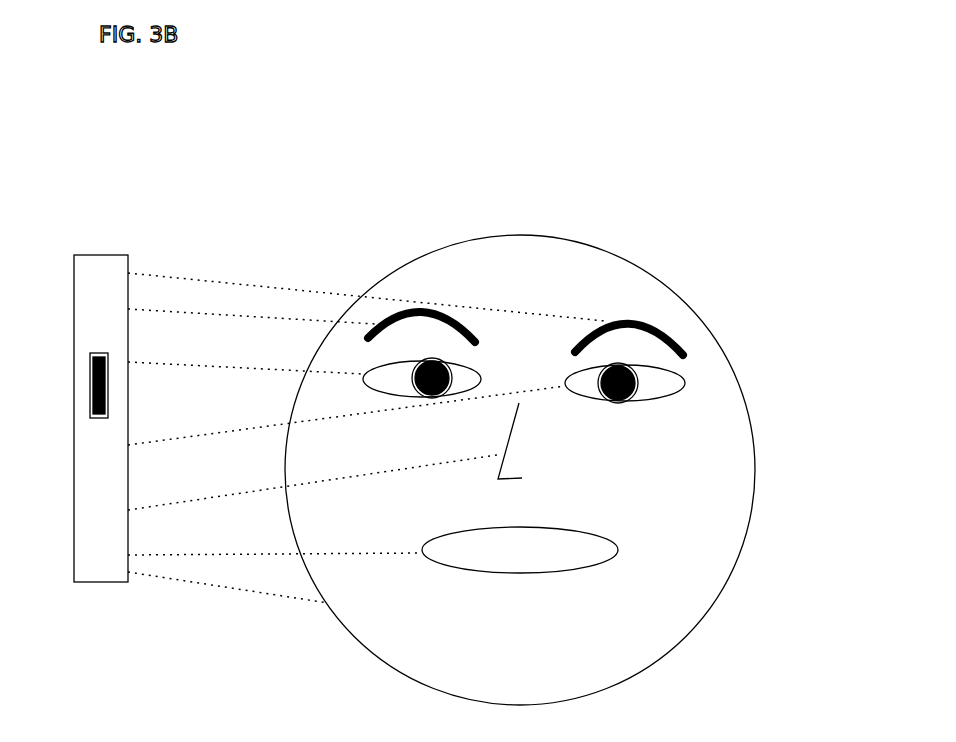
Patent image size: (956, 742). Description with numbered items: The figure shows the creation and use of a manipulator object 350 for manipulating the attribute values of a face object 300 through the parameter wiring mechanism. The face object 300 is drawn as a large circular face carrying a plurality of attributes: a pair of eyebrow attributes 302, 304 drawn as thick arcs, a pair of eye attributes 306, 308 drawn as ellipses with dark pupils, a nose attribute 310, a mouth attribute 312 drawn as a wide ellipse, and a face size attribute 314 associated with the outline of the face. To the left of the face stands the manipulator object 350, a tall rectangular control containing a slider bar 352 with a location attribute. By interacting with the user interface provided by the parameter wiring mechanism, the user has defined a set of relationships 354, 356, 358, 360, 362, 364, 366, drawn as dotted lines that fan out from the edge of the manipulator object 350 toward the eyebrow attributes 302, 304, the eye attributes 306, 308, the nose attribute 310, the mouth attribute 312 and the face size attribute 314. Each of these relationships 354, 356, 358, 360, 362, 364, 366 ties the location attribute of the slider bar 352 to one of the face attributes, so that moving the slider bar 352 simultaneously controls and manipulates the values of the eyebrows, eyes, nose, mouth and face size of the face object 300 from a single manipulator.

The face object 300 is at (551, 445).
The eyebrow attribute 302 is at (397, 307).
The eyebrow attribute 304 is at (660, 322).
The eye attribute 306 is at (477, 368).
The eye attribute 308 is at (688, 371).
The nose attribute 310 is at (516, 461).
The mouth attribute 312 is at (453, 569).
The face size attribute 314 is at (751, 521).
The manipulator object 350 is at (103, 254).
The slider bar 352 is at (89, 390).
The relationship 354 is at (200, 276).
The relationship 356 is at (232, 318).
The relationship 358 is at (181, 368).
The relationship 360 is at (207, 437).
The relationship 362 is at (240, 496).
The relationship 364 is at (243, 558).
The relationship 366 is at (173, 583).